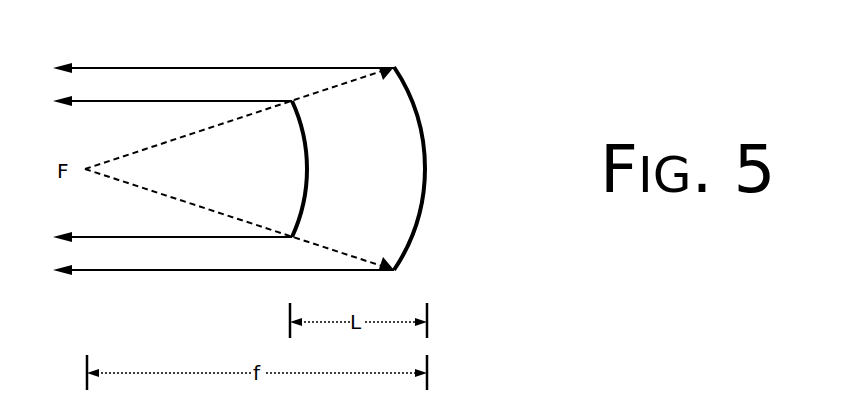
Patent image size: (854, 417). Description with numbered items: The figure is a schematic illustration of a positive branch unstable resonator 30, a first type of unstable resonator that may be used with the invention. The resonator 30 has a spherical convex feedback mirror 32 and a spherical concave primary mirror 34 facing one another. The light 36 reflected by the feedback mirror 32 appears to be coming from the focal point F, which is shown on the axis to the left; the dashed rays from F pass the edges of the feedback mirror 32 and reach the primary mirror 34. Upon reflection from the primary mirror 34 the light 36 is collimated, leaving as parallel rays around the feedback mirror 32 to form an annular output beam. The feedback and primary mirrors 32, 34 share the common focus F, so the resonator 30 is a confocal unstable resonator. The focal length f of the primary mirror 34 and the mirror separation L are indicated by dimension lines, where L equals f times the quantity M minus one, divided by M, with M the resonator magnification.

The positive branch unstable resonator 30 is at (322, 30).
The feedback mirror 32 is at (307, 150).
The primary mirror 34 is at (424, 132).
The light 36 is at (320, 91).